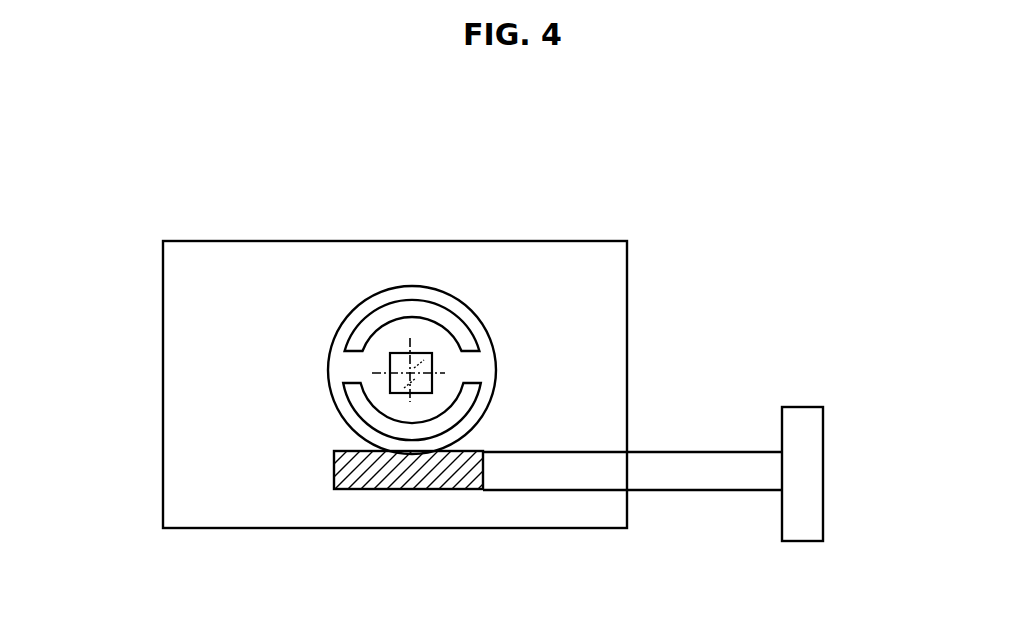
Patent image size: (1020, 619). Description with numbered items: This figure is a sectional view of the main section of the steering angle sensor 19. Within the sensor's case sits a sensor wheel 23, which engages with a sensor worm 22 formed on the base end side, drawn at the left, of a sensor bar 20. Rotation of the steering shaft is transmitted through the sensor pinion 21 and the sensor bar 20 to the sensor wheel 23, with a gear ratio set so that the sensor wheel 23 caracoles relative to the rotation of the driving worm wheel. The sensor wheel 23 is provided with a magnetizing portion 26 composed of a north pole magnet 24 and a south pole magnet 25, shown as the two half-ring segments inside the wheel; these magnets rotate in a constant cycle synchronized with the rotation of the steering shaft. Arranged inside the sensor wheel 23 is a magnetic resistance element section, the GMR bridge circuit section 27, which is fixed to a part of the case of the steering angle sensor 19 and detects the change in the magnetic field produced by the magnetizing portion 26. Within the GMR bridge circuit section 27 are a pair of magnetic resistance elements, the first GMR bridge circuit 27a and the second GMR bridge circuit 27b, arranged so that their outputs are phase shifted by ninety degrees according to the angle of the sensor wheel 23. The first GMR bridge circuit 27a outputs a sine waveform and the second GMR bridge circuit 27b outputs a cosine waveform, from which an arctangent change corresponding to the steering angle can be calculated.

The steering angle sensor 19 is at (564, 239).
The sensor bar 20 is at (670, 452).
The sensor pinion 21 is at (813, 422).
The sensor worm 22 is at (400, 482).
The sensor wheel 23 is at (488, 327).
The north pole magnet 24 is at (332, 350).
The south pole magnet 25 is at (330, 395).
The magnetizing portion 26 is at (256, 346).
The GMR bridge circuit section 27 is at (398, 353).
The first GMR bridge circuit 27a is at (412, 378).
The second GMR bridge circuit 27b is at (417, 373).